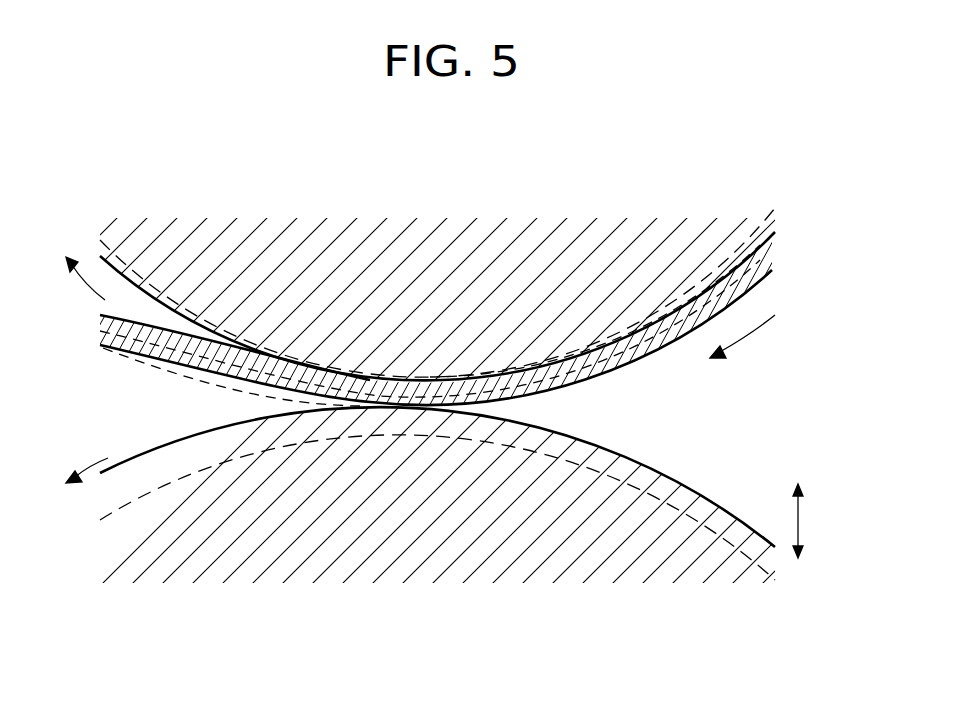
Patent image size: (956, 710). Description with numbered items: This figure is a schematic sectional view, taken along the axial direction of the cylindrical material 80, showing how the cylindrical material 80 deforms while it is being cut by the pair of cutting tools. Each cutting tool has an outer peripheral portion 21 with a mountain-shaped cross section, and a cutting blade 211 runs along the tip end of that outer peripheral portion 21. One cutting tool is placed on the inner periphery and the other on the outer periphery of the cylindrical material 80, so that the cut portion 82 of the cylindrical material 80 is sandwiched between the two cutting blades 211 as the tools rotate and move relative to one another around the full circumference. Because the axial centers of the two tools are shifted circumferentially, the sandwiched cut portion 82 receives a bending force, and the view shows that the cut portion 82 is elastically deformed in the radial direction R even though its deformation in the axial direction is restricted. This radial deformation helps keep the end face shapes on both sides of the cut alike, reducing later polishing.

The outer peripheral portion 21 is at (573, 347).
The cutting blade 211 is at (155, 318).
The cylindrical material 80 is at (657, 352).
The cut portion 82 is at (415, 383).
The radial direction R is at (808, 521).